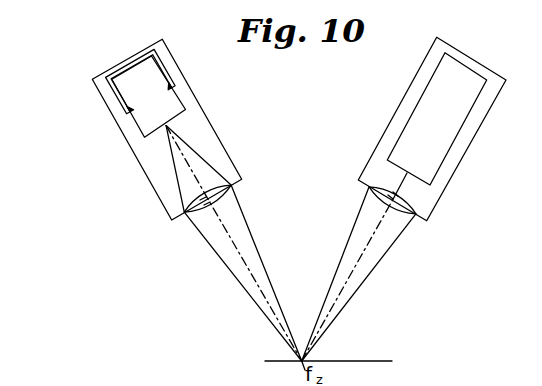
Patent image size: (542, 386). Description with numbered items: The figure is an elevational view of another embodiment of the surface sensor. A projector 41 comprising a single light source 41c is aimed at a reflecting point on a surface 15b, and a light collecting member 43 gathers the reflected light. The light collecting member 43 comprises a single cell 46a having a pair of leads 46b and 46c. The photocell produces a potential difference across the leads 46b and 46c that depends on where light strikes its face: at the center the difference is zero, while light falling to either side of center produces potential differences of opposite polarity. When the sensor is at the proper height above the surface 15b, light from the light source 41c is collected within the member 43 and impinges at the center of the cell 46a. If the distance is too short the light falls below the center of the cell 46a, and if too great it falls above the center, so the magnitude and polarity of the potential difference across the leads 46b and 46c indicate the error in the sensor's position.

The projector 41 is at (377, 152).
The light source 41c is at (415, 106).
The light collecting member 43 is at (212, 124).
The cell 46a is at (134, 128).
The lead 46b is at (162, 39).
The lead 46c is at (104, 84).
The surface 15b is at (340, 361).